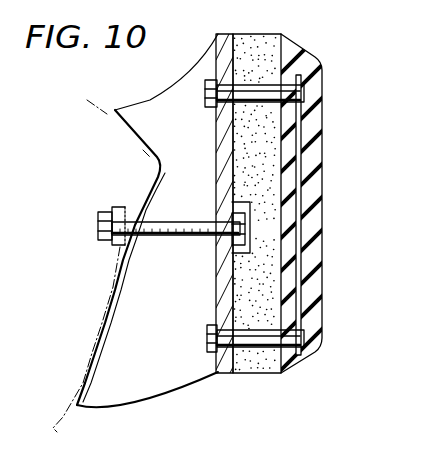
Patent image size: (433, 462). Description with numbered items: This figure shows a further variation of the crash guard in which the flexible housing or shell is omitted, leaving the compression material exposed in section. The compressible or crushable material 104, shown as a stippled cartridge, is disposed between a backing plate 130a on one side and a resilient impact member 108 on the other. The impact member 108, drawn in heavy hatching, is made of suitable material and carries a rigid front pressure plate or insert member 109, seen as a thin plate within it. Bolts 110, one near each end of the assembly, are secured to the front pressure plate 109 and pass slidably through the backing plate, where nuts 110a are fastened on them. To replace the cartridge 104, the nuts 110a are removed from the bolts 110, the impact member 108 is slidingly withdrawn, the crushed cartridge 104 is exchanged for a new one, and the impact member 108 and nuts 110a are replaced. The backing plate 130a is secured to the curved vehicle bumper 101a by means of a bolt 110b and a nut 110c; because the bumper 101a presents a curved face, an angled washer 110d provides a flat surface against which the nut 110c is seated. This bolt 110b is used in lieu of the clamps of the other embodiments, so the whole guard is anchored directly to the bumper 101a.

The bumper 101a is at (107, 315).
The compressible material 104 is at (267, 188).
The impact member 108 is at (322, 119).
The front pressure plate 109 is at (302, 150).
The bolts 110 is at (250, 92).
The nuts 110a is at (207, 107).
The bolt 110b is at (178, 222).
The nut 110c is at (98, 220).
The angled washer 110d is at (127, 205).
The backing plate 130a is at (228, 265).